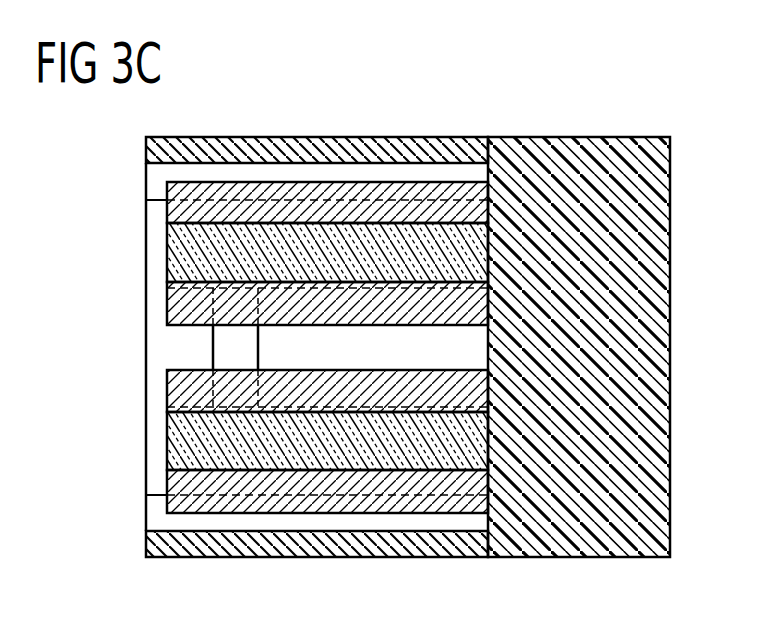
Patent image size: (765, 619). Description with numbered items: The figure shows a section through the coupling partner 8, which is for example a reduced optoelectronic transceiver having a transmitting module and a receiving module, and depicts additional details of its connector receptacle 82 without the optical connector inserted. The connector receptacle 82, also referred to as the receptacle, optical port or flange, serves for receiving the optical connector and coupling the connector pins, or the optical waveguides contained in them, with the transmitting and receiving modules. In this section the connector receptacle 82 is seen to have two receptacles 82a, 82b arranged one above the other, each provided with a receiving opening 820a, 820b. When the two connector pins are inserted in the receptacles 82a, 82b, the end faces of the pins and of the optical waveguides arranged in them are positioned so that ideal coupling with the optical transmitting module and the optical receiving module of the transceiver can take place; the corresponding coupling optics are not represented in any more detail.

The coupling partner 8 is at (566, 157).
The connector receptacle 82 is at (260, 335).
The receptacle 82a is at (186, 193).
The receiving opening 820a is at (186, 257).
The receiving opening 820b is at (184, 443).
The receptacle 82b is at (184, 489).